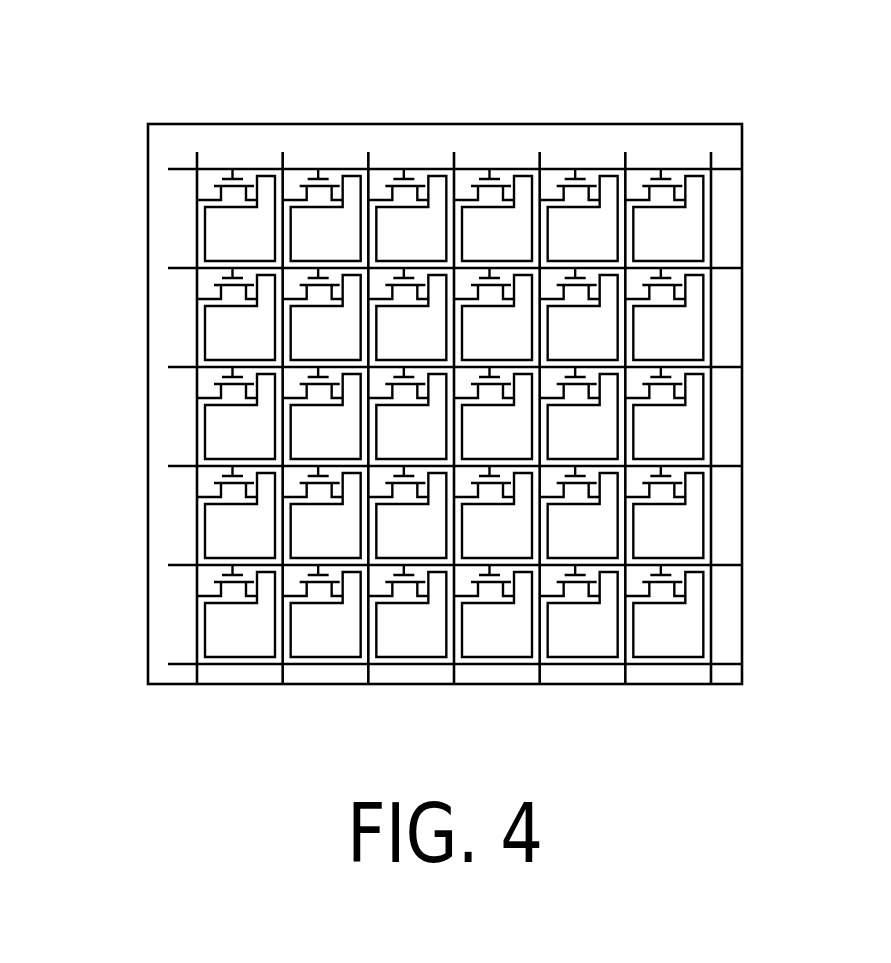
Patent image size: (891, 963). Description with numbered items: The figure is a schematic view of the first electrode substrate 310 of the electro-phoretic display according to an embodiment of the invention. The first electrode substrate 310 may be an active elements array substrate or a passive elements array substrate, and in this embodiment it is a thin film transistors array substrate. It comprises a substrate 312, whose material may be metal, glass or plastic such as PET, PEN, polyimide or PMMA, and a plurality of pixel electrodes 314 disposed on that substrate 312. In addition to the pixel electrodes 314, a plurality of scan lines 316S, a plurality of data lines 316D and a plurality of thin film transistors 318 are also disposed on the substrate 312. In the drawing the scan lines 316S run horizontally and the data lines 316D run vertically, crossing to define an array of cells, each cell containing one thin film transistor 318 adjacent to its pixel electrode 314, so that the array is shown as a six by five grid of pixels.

The first electrode substrate 310 is at (797, 661).
The substrate 312 is at (702, 137).
The pixel electrode 314 is at (213, 248).
The data line 316D is at (195, 162).
The scan line 316S is at (177, 171).
The thin film transistor 318 is at (252, 178).